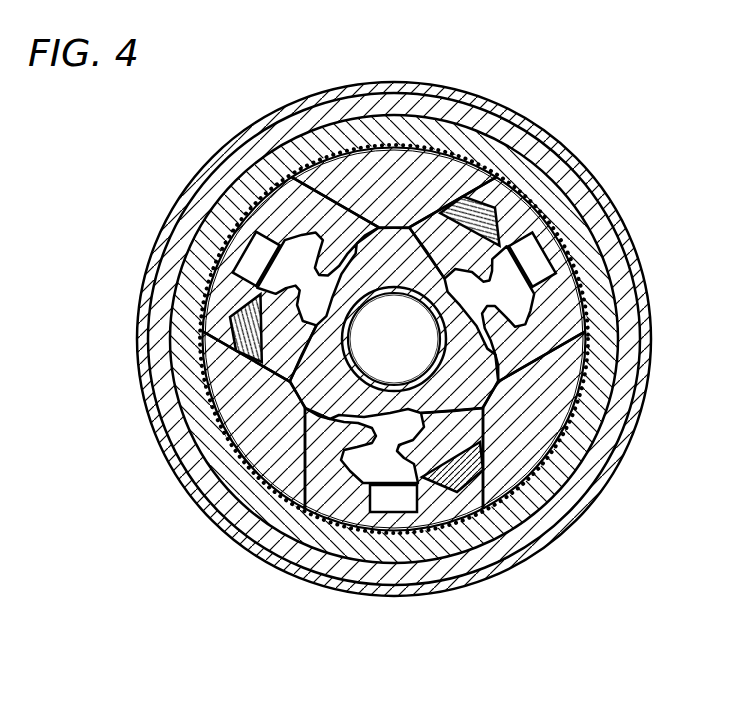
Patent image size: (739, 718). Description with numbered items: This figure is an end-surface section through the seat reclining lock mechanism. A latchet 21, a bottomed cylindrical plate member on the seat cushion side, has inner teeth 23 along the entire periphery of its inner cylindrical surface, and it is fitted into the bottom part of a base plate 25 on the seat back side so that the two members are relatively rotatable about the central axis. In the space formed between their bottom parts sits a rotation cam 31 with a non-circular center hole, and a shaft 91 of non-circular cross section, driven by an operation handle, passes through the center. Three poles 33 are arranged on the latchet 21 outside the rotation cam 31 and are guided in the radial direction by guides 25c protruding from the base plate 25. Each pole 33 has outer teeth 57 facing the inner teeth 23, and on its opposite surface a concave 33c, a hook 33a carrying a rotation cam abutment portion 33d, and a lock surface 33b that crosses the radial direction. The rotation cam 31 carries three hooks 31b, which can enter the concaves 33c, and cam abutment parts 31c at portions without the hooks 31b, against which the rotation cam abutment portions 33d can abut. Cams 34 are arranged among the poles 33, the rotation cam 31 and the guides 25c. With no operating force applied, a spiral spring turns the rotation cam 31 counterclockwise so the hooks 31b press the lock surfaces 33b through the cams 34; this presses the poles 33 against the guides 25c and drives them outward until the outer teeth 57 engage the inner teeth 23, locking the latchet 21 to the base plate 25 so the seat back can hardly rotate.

The latchet 21 is at (632, 447).
The inner teeth 23 is at (628, 318).
The base plate 25 is at (618, 393).
The guides 25c is at (366, 165).
The rotation cam 31 is at (305, 358).
The hooks 31b is at (482, 230).
The cam abutment parts 31c is at (323, 262).
The poles 33 is at (530, 202).
The hooks 33a is at (546, 266).
The lock surfaces 33b is at (502, 240).
The concaves 33c is at (540, 246).
The rotation cam abutment portions 33d is at (560, 291).
The cams 34 is at (464, 205).
The outer teeth 57 is at (546, 216).
The shaft 91 is at (430, 326).